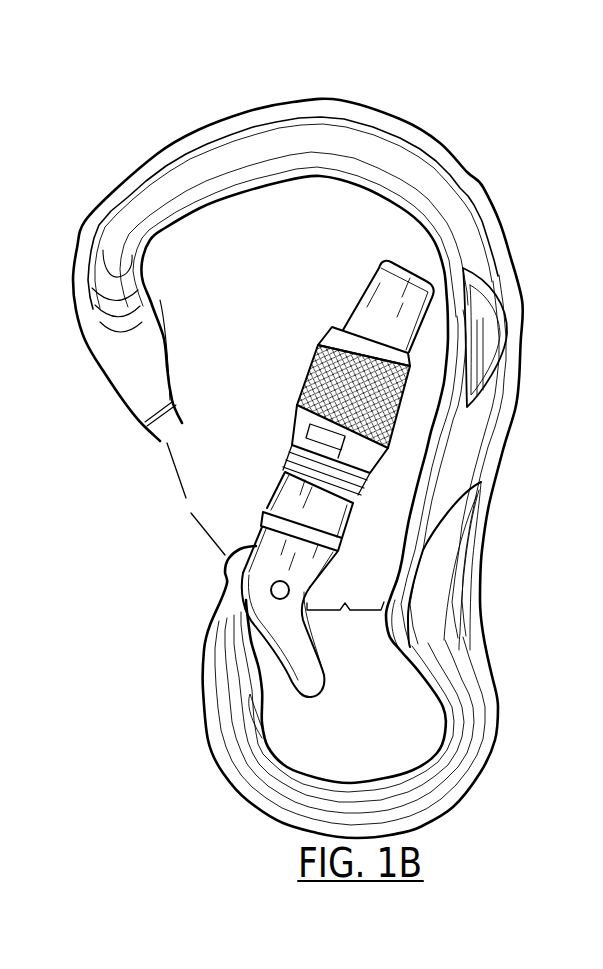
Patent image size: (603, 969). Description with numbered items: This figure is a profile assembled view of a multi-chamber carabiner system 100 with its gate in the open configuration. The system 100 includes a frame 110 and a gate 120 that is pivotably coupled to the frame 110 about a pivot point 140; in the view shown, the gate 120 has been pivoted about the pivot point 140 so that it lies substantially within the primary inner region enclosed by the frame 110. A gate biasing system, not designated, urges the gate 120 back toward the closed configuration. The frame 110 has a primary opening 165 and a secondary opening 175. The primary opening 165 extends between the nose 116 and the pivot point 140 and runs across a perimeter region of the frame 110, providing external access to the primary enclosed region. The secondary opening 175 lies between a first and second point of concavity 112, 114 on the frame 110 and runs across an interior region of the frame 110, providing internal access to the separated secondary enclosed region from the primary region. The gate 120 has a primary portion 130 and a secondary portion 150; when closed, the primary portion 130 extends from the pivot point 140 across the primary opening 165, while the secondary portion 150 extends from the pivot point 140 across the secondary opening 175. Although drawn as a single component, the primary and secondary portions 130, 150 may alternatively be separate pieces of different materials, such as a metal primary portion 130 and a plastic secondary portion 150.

The multi-chamber carabiner system 100 is at (311, 435).
The frame 110 is at (311, 468).
The first point of concavity 112 is at (317, 579).
The second point of concavity 114 is at (397, 617).
The nose 116 is at (147, 391).
The gate 120 is at (286, 478).
The primary portion 130 is at (388, 300).
The pivot point 140 is at (271, 589).
The secondary portion 150 is at (290, 655).
The primary opening 165 is at (186, 499).
The secondary opening 175 is at (345, 625).